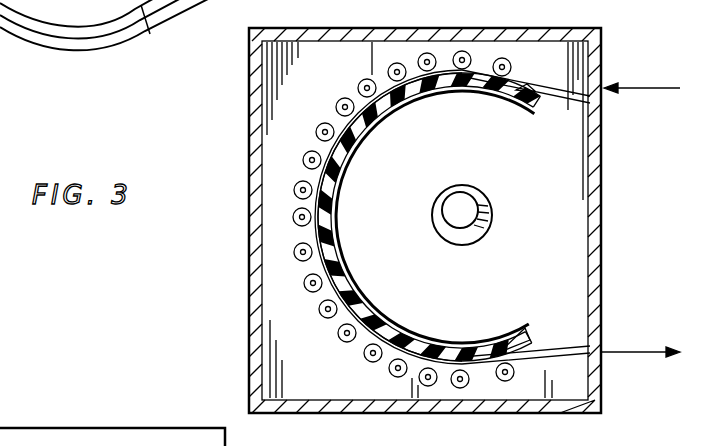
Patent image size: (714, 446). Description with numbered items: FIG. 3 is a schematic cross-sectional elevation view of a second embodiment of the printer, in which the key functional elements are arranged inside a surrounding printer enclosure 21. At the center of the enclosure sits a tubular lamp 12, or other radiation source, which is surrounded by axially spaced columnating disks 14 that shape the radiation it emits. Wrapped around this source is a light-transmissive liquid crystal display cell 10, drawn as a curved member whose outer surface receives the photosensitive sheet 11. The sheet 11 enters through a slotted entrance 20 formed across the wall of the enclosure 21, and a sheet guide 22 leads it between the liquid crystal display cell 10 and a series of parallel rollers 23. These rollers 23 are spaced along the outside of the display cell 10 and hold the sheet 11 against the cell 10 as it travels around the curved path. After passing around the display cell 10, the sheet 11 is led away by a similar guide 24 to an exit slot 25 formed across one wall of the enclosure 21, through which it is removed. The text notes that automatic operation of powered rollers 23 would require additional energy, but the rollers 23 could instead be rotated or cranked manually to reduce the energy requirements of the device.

The liquid crystal display cell 10 is at (417, 110).
The photosensitive sheet 11 is at (357, 97).
The tubular lamp 12 is at (470, 210).
The columnating disks 14 is at (478, 193).
The slotted entrance 20 is at (612, 92).
The printer enclosure 21 is at (545, 411).
The sheet guide 22 is at (567, 103).
The rollers 23 is at (393, 378).
The guide 24 is at (567, 346).
The exit slot 25 is at (603, 357).